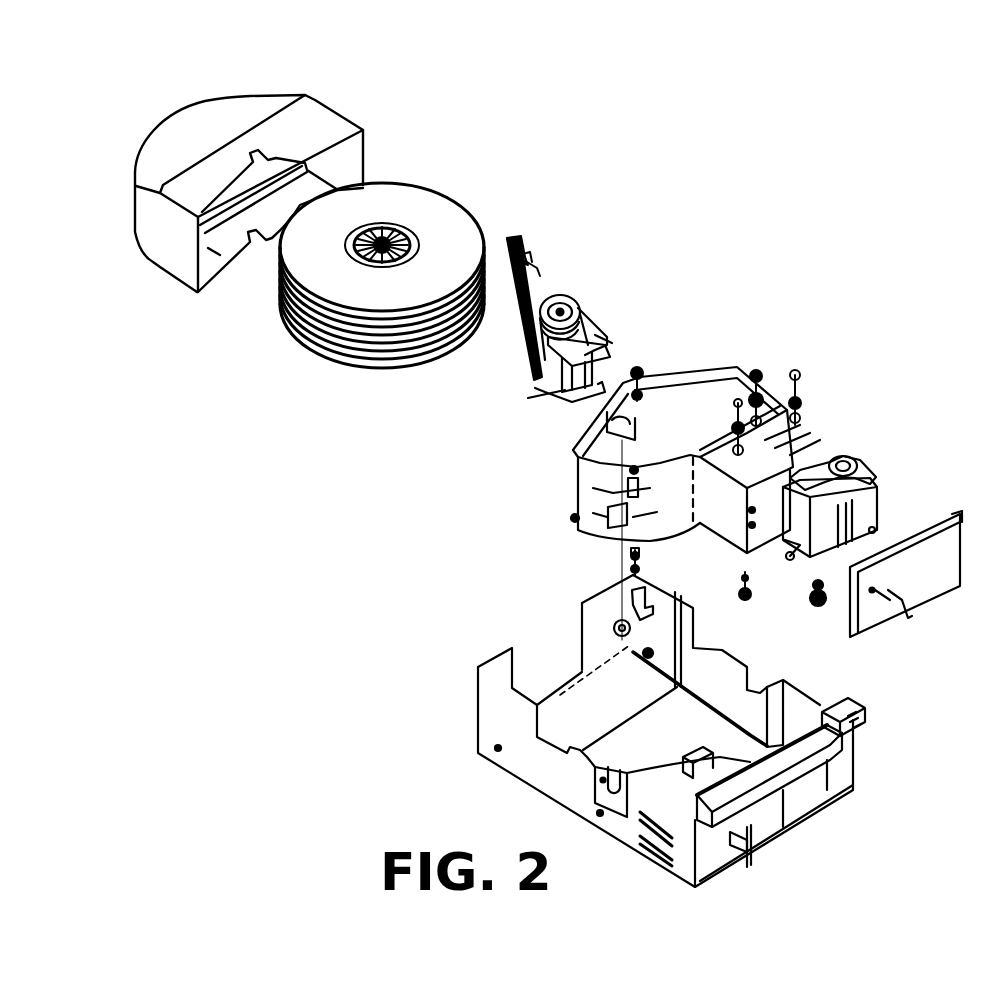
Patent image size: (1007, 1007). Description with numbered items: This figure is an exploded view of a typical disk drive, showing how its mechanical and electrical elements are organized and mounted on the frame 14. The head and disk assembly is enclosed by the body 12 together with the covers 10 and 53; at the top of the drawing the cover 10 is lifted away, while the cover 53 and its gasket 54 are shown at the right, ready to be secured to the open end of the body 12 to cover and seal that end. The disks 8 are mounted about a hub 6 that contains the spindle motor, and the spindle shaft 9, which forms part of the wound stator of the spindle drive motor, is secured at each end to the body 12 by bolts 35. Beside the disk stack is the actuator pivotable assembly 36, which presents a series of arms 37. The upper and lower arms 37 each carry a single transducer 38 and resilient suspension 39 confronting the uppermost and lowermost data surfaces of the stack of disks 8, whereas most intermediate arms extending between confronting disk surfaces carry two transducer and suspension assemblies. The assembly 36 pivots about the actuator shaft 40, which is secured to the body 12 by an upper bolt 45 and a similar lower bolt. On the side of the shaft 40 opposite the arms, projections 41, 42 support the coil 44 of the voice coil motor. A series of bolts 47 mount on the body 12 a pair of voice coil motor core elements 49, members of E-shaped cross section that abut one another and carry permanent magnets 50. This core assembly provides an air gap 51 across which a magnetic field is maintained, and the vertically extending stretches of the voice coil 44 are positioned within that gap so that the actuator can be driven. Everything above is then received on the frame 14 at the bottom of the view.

The hub 6 is at (382, 238).
The disks 8 is at (428, 200).
The spindle shaft 9 is at (385, 240).
The cover 10 is at (310, 113).
The body 12 is at (578, 530).
The frame 14 is at (478, 716).
The bolts 35 is at (637, 366).
The actuator pivotable assembly 36 is at (560, 292).
The arms 37 is at (537, 267).
The transducer 38 is at (507, 238).
The resilient suspension 39 is at (530, 247).
The actuator shaft 40 is at (565, 306).
The projection 41 is at (598, 337).
The projection 42 is at (567, 394).
The coil 44 is at (542, 370).
The upper bolt 45 is at (756, 371).
The bolts 47 is at (797, 370).
The voice coil motor core elements 49 is at (883, 503).
The permanent magnets 50 is at (843, 458).
The air gap 51 is at (855, 458).
The cover 53 is at (960, 560).
The gasket 54 is at (955, 516).